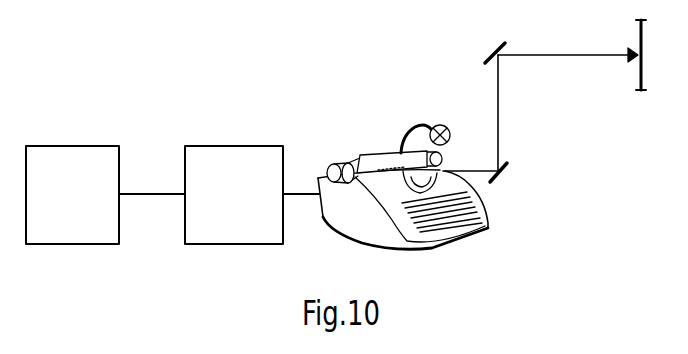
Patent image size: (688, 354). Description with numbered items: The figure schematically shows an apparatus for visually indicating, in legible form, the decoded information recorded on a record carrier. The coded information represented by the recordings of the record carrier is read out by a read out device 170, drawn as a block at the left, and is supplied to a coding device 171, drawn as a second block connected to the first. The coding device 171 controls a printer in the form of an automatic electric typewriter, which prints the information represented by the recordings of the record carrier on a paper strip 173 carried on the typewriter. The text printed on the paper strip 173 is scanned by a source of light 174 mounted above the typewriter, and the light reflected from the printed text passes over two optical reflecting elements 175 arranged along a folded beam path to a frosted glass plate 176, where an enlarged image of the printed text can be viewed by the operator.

The read out device 170 is at (68, 161).
The coding device 171 is at (225, 157).
The paper strip 173 is at (378, 162).
The source of light 174 is at (442, 127).
The optical reflecting elements 175 is at (502, 60).
The frosted glass plate 176 is at (638, 75).